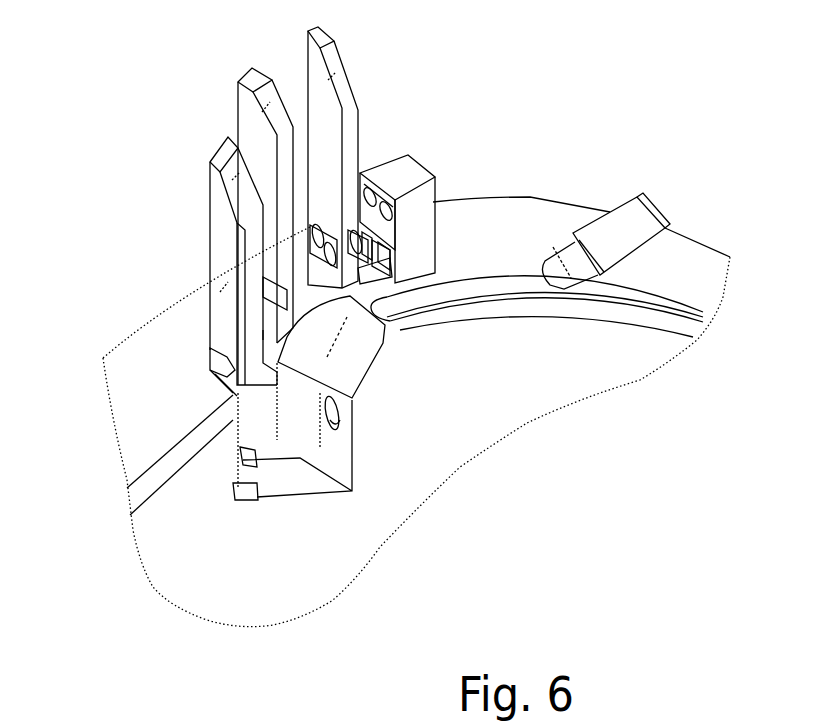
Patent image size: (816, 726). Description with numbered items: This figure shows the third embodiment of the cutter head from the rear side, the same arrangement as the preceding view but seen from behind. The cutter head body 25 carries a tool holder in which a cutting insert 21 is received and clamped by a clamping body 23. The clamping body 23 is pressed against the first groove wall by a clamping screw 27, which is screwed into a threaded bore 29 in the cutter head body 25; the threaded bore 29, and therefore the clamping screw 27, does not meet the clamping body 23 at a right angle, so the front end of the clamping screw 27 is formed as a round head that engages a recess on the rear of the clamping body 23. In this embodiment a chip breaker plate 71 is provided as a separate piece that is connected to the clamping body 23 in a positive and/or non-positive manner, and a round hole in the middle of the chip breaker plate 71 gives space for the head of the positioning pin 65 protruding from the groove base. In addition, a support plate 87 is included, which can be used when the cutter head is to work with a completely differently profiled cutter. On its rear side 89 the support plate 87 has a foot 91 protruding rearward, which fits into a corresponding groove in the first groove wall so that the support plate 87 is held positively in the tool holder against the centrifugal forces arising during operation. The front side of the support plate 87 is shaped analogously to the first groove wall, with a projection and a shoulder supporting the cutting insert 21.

The cutting insert 21 is at (243, 123).
The clamping body 23 is at (423, 162).
The cutter head body 25 is at (567, 393).
The clamping screw 27 is at (623, 222).
The threaded bore 29 is at (333, 437).
The positioning pin 65 is at (260, 497).
The chip breaker plate 71 is at (358, 117).
The support plate 87 is at (203, 218).
The rear side 89 is at (223, 305).
The foot 91 is at (207, 357).